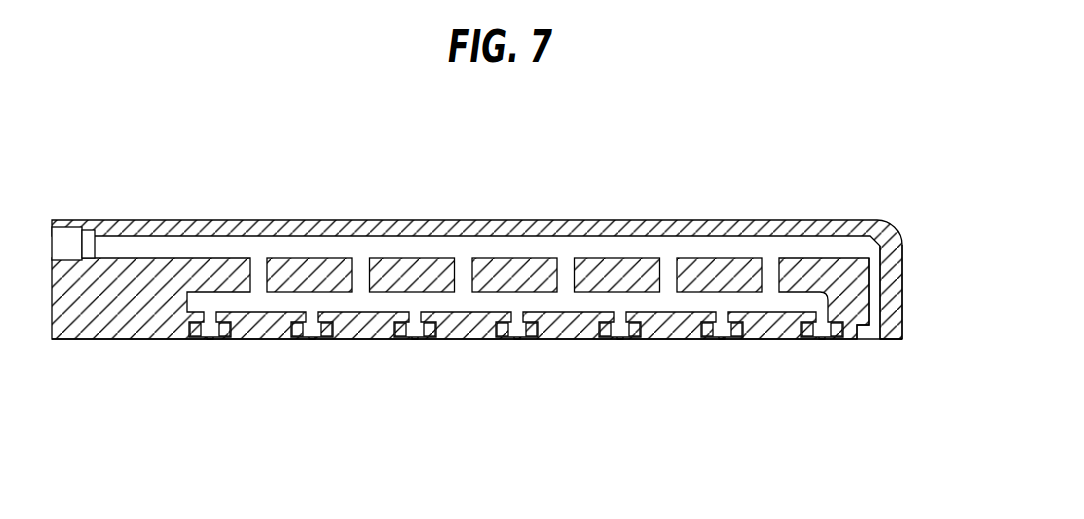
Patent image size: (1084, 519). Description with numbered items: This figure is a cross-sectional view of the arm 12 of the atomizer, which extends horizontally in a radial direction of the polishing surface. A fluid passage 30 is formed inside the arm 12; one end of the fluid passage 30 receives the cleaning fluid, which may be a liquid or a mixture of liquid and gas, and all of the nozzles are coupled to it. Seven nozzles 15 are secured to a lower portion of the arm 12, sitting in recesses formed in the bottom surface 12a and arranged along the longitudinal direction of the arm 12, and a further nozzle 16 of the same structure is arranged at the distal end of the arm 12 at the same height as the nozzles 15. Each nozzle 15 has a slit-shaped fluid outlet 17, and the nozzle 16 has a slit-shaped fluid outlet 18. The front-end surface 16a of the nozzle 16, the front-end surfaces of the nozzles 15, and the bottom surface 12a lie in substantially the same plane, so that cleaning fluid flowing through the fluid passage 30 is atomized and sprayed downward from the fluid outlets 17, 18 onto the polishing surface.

The arm 12 is at (400, 220).
The bottom surface of the arm 12a is at (772, 340).
The nozzle 15 is at (222, 340).
The nozzle 16 is at (902, 341).
The front-end surface of the nozzle 16a is at (888, 340).
The fluid outlet 17 is at (207, 339).
The fluid outlet 18 is at (875, 340).
The fluid passage 30 is at (537, 248).